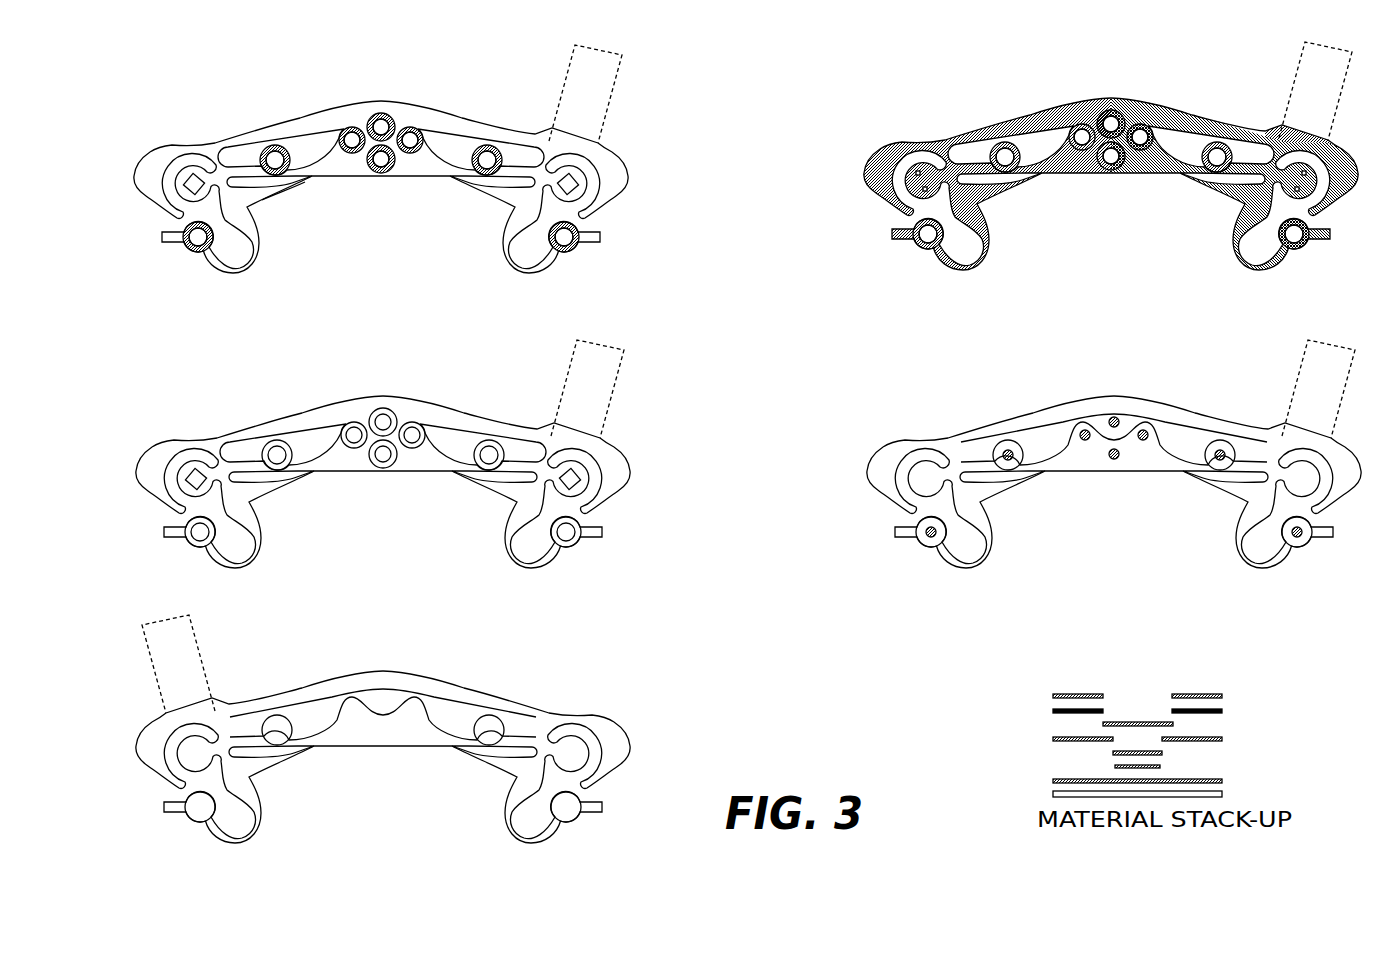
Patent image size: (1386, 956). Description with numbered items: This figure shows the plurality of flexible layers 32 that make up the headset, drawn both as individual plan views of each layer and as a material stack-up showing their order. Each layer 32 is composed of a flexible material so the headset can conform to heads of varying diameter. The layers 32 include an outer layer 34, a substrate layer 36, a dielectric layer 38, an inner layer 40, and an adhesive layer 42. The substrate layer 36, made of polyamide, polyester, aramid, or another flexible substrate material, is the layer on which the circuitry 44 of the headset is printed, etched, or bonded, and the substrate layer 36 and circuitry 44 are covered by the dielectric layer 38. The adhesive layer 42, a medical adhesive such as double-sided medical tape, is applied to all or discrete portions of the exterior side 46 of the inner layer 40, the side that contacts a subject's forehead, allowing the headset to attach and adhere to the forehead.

The layers 32 is at (196, 112).
The outer layer 34 is at (595, 707).
The substrate layer 36 is at (856, 455).
The dielectric layer 38 is at (1290, 250).
The inner layer 40 is at (569, 562).
The adhesive layer 42 is at (569, 267).
The circuitry 44 is at (1186, 751).
The exterior side 46 is at (283, 210).